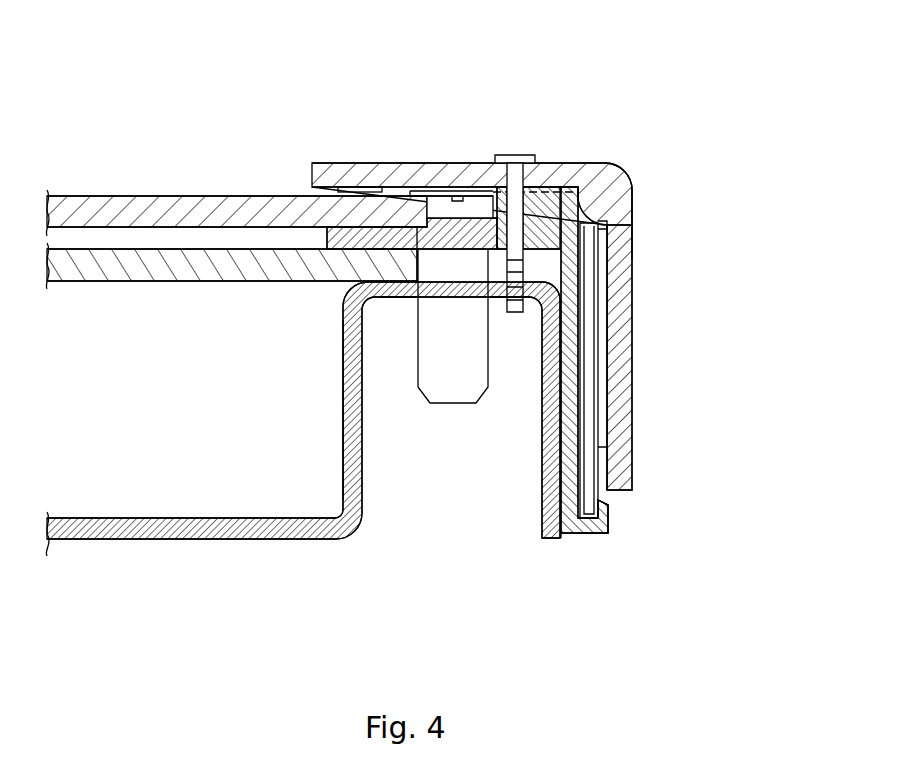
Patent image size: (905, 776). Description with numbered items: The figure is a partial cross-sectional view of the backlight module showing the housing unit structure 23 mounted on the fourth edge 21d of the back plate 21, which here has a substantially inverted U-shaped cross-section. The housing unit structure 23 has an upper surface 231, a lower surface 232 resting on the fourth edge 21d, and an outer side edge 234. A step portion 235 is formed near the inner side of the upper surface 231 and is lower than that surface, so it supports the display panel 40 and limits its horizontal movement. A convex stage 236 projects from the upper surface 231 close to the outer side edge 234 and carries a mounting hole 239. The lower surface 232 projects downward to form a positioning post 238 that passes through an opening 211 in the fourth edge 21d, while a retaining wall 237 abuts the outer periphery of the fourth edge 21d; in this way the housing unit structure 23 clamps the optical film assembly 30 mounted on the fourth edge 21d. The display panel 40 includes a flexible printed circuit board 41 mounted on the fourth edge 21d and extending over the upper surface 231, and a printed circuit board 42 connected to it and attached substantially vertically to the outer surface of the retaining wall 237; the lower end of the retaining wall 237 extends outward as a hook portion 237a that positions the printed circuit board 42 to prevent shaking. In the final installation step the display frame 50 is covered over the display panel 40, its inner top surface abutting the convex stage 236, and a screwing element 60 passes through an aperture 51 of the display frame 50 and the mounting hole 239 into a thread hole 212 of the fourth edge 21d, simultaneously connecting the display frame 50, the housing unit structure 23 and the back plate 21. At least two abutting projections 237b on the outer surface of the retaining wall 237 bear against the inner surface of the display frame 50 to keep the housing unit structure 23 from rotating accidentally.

The back plate 21 is at (303, 419).
The fourth edge 21d is at (343, 357).
The opening 211 is at (400, 298).
The thread hole 212 is at (493, 298).
The housing unit structure 23 is at (535, 327).
The upper surface 231 is at (437, 163).
The lower surface 232 is at (280, 200).
The outer side edge 234 is at (630, 180).
The step portion 235 is at (370, 163).
The convex stage 236 is at (558, 160).
The retaining wall 237 is at (576, 540).
The hook portion 237a is at (608, 517).
The abutting projection 237b is at (632, 218).
The positioning post 238 is at (462, 403).
The mounting hole 239 is at (606, 298).
The optical film assembly 30 is at (119, 268).
The display panel 40 is at (130, 200).
The flexible printed circuit board 41 is at (481, 163).
The printed circuit board 42 is at (596, 420).
The display frame 50 is at (630, 378).
The aperture 51 is at (547, 158).
The screwing element 60 is at (518, 155).